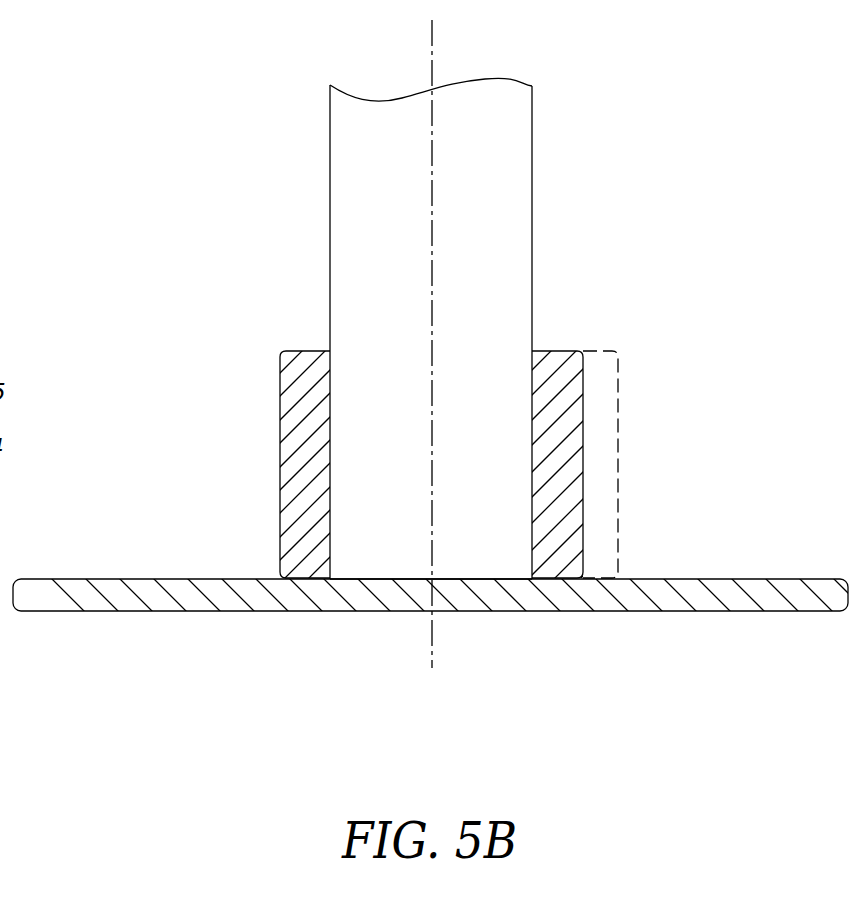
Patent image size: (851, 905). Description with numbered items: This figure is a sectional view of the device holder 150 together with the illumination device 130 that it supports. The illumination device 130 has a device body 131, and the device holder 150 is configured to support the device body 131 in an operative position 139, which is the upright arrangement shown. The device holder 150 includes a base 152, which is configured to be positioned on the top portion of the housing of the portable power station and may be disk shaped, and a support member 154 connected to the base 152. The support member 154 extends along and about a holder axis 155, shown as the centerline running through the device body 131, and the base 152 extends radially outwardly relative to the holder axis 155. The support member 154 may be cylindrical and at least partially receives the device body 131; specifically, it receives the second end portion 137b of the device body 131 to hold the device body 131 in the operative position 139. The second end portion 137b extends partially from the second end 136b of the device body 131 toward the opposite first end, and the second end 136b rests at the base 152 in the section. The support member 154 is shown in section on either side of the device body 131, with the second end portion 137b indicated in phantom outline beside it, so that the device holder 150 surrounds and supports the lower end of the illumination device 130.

The holder axis 155 is at (432, 29).
The illumination device 130 is at (348, 328).
The device body 131 is at (330, 170).
The operative position 139 is at (348, 328).
The device holder 150 is at (464, 470).
The support member 154 is at (297, 467).
The second end portion 137b is at (637, 461).
The base 152 is at (79, 592).
The second end 136b is at (375, 580).